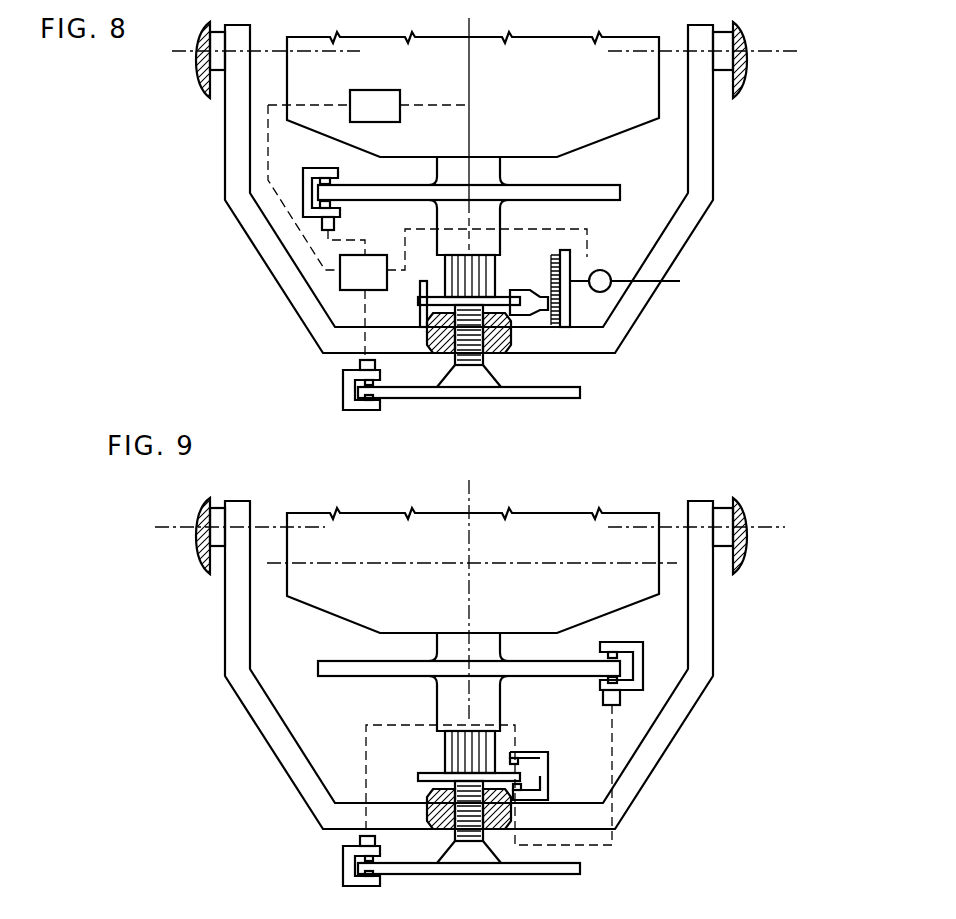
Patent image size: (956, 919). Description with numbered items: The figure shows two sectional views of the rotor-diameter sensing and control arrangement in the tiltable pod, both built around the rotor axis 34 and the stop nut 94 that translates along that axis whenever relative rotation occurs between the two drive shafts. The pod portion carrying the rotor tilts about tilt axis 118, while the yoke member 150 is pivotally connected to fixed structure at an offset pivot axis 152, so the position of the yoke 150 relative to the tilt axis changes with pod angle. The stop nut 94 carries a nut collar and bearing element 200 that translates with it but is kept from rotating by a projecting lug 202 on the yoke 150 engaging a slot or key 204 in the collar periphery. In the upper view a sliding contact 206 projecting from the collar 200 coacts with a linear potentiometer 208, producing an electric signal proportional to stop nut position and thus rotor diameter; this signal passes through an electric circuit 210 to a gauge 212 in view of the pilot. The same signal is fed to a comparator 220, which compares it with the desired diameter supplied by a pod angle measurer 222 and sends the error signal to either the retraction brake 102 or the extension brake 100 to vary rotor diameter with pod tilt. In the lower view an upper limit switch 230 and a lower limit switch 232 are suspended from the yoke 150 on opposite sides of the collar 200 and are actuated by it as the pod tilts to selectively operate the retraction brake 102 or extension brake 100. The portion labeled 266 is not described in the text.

In FIG. 8, the axis 34 is at (470, 90).
In FIG. 8, the stop nut 94 is at (496, 272).
In FIG. 9, the stop nut 94 is at (437, 736).
In FIG. 8, the extension brake 100 is at (496, 399).
In FIG. 9, the extension brake 100 is at (469, 883).
In FIG. 8, the retraction brake 102 is at (586, 196).
In FIG. 9, the retraction brake 102 is at (469, 667).
In FIG. 9, the tilt axis 118 is at (472, 552).
In FIG. 8, the yoke member 150 is at (233, 207).
In FIG. 9, the yoke member 150 is at (519, 665).
In FIG. 8, the pivot axis 152 is at (194, 52).
In FIG. 9, the pivot axis 152 is at (779, 535).
In FIG. 8, the nut collar and bearing element 200 is at (498, 297).
In FIG. 9, the nut collar and bearing element 200 is at (447, 767).
In FIG. 8, the projecting lug 202 is at (420, 286).
In FIG. 8, the slot or key 204 is at (420, 306).
In FIG. 8, the sliding contact 206 is at (540, 310).
In FIG. 8, the linear potentiometer 208 is at (566, 312).
In FIG. 8, the electric circuit 210 is at (578, 272).
In FIG. 8, the gauge 212 is at (649, 290).
In FIG. 8, the comparator 220 is at (355, 276).
In FIG. 8, the pod angle measurer 222 is at (395, 79).
In FIG. 9, the upper limit switch 230 is at (556, 757).
In FIG. 9, the lower limit switch 232 is at (560, 781).
In FIG. 8, the container 266 is at (624, 99).
In FIG. 9, the container 266 is at (473, 570).